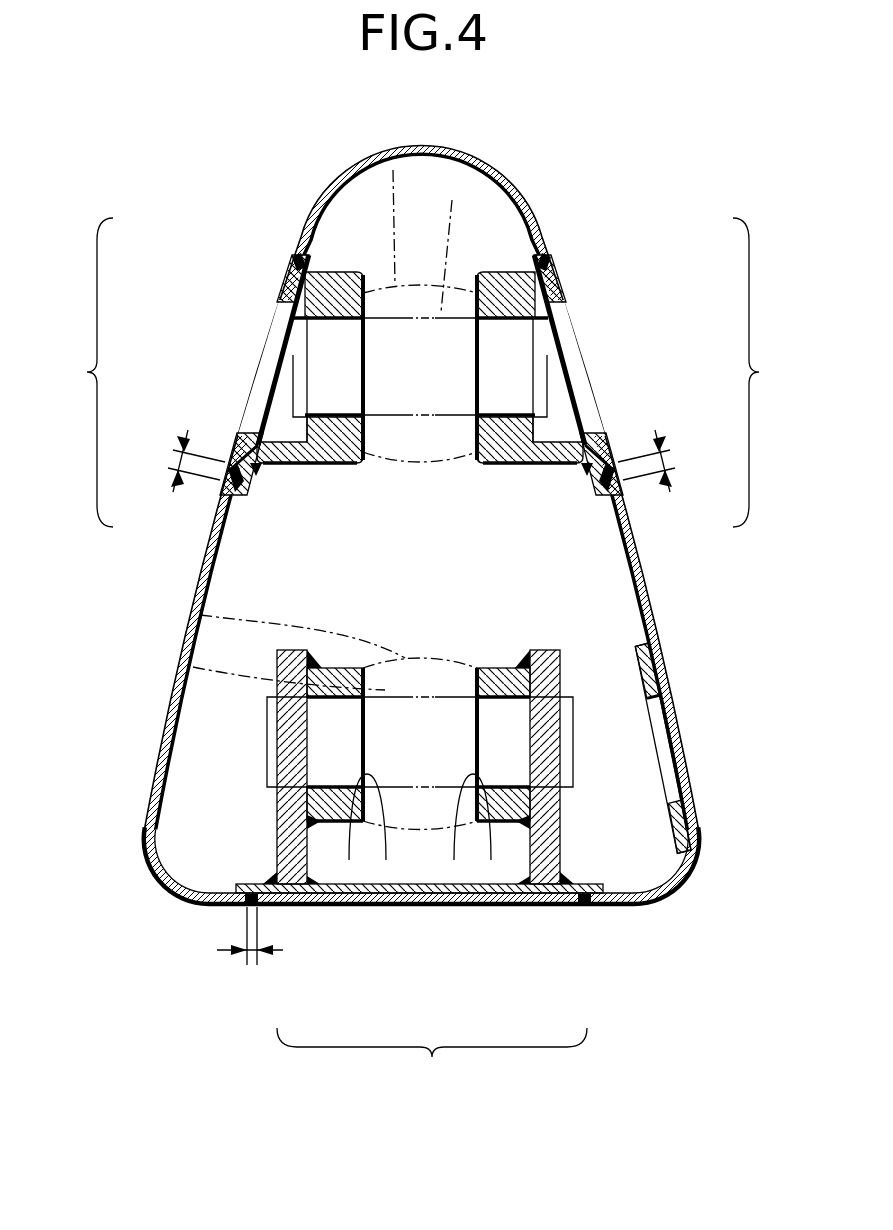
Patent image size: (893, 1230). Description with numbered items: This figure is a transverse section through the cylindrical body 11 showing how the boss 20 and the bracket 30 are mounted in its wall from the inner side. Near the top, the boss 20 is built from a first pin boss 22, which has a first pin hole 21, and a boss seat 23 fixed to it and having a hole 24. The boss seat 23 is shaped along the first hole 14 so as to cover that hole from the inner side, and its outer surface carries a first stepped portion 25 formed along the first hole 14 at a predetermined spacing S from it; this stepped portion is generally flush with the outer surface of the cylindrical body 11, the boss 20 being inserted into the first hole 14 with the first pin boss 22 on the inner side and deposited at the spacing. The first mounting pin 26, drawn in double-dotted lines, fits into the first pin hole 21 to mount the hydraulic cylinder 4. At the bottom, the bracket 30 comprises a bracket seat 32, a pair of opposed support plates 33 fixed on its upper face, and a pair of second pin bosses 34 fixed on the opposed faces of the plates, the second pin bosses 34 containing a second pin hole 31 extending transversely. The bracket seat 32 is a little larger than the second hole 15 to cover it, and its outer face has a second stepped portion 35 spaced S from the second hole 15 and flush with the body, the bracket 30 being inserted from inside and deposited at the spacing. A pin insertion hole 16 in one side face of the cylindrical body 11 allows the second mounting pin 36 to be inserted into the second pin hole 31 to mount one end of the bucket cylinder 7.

The cylindrical body 11 is at (347, 176).
The hydraulic cylinder 4 is at (393, 170).
The first mounting pin 26 is at (452, 200).
The first hole 14 is at (293, 260).
The boss seat 23 is at (285, 270).
The hole 24 is at (292, 300).
The first pin hole 21 is at (305, 328).
The first stepped portion 25 is at (250, 438).
The first pin boss 22 is at (238, 497).
The boss 20 is at (46, 392).
The bucket cylinder 7 is at (200, 615).
The second mounting pin 36 is at (193, 667).
The pin insertion hole 16 is at (662, 707).
The support plates 33 is at (288, 873).
The second pin bosses 34 is at (349, 860).
The second pin hole 31 is at (386, 860).
The bracket seat 32 is at (425, 900).
The second hole 15 is at (247, 907).
The second stepped portion 35 is at (580, 905).
The bracket 30 is at (417, 1096).